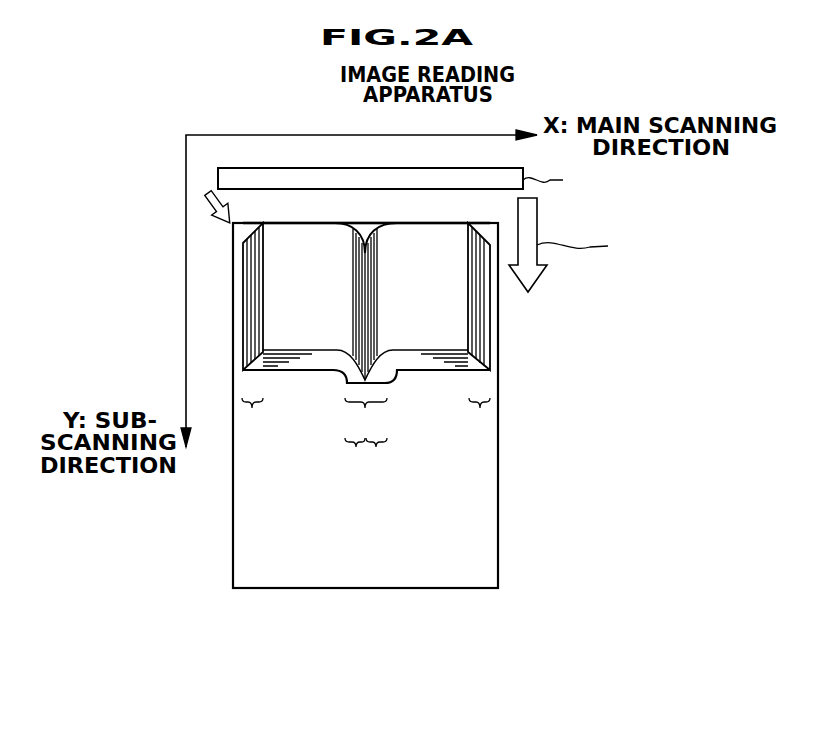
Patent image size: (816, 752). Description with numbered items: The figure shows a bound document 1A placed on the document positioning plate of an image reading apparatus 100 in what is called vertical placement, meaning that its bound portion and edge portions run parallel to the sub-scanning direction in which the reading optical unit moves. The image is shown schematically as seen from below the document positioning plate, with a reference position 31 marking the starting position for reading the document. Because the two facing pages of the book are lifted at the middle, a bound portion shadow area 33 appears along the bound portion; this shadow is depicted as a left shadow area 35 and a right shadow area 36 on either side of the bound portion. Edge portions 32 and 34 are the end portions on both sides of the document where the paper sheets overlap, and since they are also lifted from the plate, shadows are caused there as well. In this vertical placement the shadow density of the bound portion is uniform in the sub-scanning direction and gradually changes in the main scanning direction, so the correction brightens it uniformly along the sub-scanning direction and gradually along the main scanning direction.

The image reading apparatus 100 is at (333, 97).
The bound document 1A is at (450, 328).
The reference position 31 is at (223, 217).
The edge portion 32 is at (480, 412).
The bound portion shadow area 33 is at (365, 410).
The edge portion 34 is at (252, 410).
The left shadow area of bound portion 35 is at (357, 448).
The right shadow area of bound portion 36 is at (375, 448).